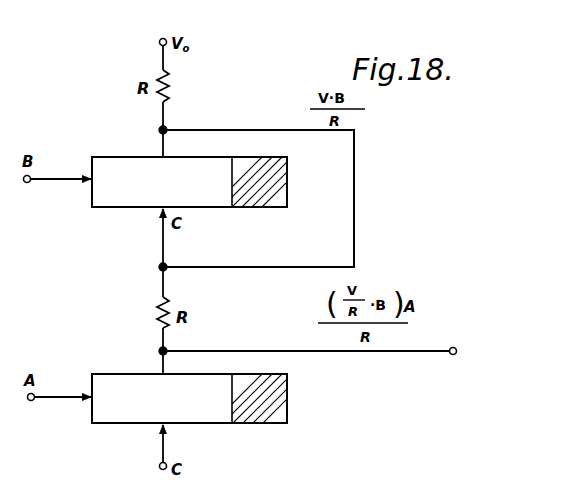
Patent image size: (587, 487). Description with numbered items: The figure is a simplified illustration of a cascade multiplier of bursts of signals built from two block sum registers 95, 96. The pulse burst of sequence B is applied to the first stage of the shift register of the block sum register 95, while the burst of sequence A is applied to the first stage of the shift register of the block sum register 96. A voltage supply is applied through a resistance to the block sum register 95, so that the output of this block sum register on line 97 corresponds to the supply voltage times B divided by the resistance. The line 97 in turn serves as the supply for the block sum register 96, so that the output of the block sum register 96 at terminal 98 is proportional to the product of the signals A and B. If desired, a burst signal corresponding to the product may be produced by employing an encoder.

The block sum register 95 is at (108, 155).
The block sum register 96 is at (118, 373).
The line 97 is at (354, 197).
The terminal 98 is at (453, 356).